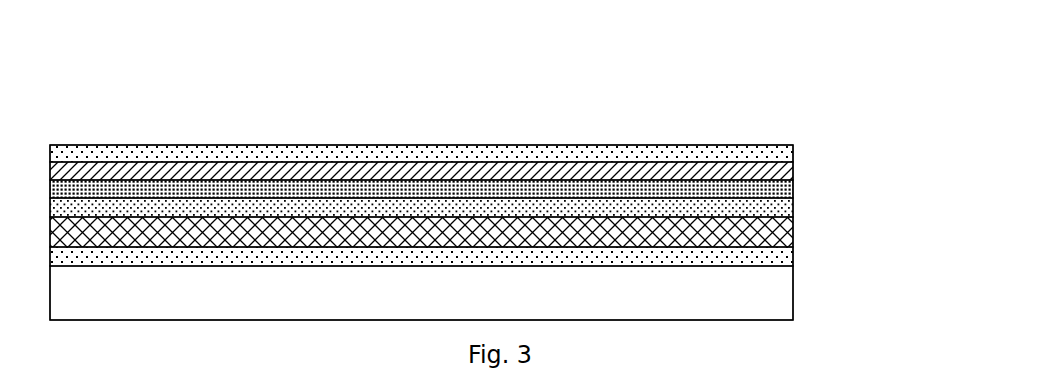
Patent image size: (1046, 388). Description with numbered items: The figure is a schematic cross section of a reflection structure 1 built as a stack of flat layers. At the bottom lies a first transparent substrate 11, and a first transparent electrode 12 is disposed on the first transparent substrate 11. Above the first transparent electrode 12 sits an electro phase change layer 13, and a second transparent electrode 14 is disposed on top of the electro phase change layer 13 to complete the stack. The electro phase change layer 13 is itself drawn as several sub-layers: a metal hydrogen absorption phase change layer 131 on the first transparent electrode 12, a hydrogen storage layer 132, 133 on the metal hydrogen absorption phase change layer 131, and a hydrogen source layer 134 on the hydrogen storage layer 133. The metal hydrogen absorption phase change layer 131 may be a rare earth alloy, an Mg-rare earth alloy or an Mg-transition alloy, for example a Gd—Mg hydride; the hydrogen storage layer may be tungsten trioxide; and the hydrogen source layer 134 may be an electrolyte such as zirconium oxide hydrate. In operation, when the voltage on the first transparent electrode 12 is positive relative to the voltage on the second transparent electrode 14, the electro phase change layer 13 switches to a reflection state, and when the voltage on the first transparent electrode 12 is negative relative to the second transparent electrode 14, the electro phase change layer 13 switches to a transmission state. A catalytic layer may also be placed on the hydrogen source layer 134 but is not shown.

The reflection structure 1 is at (441, 102).
The first transparent substrate 11 is at (753, 299).
The first transparent electrode 12 is at (753, 253).
The electro phase change layer 13 is at (500, 204).
The metal hydrogen absorption phase change layer 131 is at (463, 232).
The hydrogen storage layer 132 is at (753, 206).
The hydrogen storage layer 133 is at (753, 190).
The hydrogen source layer 134 is at (753, 172).
The second transparent electrode 14 is at (753, 151).